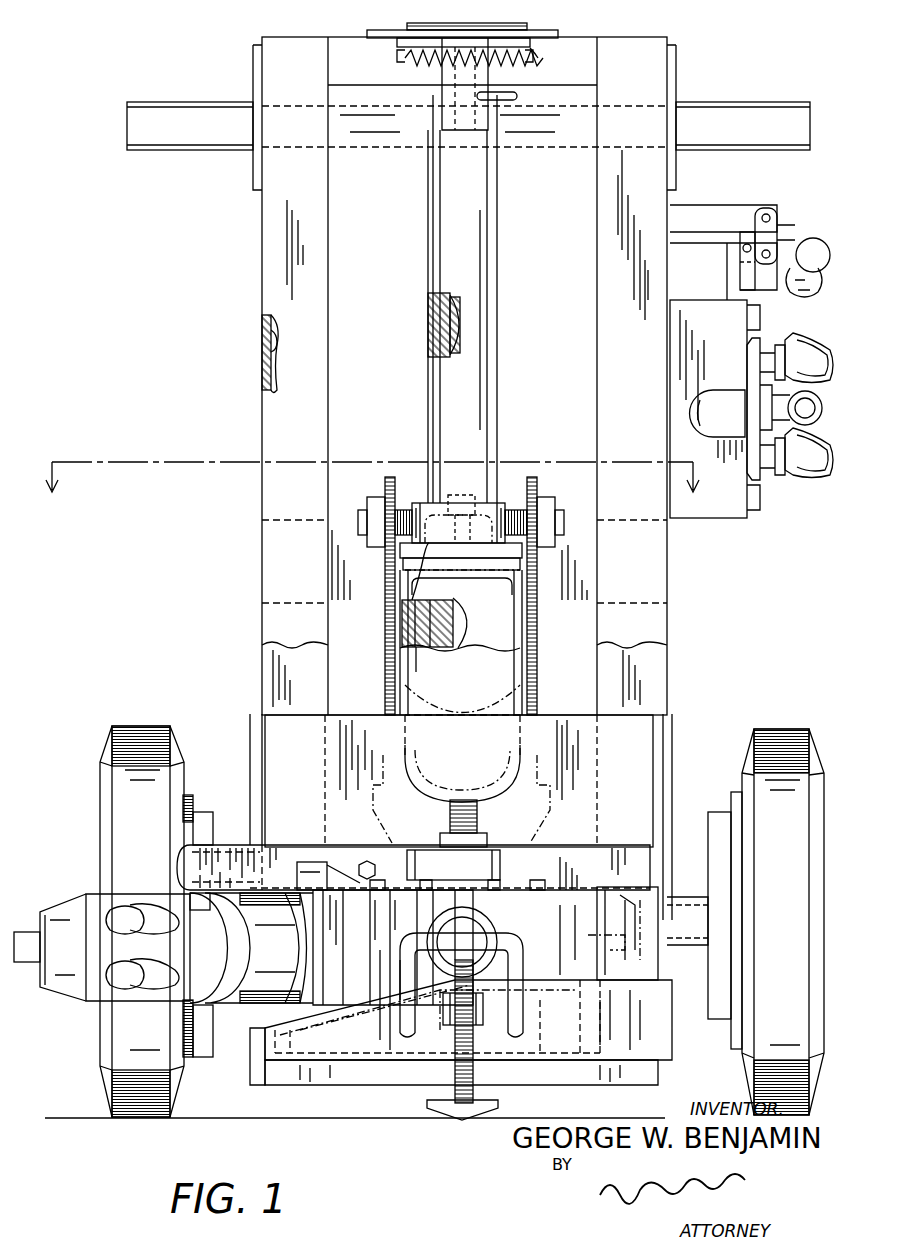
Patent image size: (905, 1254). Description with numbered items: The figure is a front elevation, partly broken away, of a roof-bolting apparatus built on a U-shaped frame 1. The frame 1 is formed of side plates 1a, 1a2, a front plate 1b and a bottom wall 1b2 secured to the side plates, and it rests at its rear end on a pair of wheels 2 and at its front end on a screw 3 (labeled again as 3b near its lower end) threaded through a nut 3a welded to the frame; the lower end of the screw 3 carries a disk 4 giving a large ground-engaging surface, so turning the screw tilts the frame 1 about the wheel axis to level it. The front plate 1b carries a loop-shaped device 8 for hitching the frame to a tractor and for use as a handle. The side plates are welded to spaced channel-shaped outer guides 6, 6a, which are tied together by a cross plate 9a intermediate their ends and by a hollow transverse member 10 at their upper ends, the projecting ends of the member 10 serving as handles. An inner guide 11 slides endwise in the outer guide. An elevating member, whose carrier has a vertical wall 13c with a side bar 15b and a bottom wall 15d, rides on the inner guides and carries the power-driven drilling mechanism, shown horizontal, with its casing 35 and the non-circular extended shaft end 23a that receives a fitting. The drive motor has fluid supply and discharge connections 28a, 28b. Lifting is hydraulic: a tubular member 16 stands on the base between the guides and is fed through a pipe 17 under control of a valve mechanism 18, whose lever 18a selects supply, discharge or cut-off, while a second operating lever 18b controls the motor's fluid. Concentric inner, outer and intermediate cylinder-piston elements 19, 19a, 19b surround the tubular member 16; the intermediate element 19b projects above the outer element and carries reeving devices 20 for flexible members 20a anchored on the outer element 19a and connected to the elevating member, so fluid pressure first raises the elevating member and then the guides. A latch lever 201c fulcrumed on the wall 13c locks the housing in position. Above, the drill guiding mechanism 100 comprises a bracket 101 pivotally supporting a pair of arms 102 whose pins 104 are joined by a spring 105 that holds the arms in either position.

The frame 1 is at (230, 1056).
The side plate 1a is at (250, 1075).
The side plate 1a2 is at (672, 1038).
The front plate 1b is at (640, 985).
The bottom wall 1b2 is at (265, 1085).
The wheels 2 is at (141, 726).
The screw 3 is at (369, 491).
The nut 3a is at (470, 1030).
The screw (3) 3b is at (455, 1090).
The disk 4 is at (450, 1118).
The outer guide 6 is at (262, 335).
The outer guide 6a is at (667, 690).
The loop-shaped device 8 is at (523, 1010).
The cross plate 9a is at (582, 571).
The hollow transverse member 10 is at (350, 130).
The inner guide 11 is at (266, 368).
The vertical wall 13c is at (640, 765).
The side bar 15b is at (595, 915).
The bottom wall 15d is at (560, 1060).
The tubular member 16 is at (455, 327).
The pipe 17 is at (815, 455).
The valve mechanism 18 is at (742, 554).
The lever 18a is at (770, 282).
The operating lever 18b is at (783, 240).
The inner cylinder-piston element 19 is at (428, 310).
The outer cylinder-piston element 19a is at (412, 595).
The intermediate cylinder-piston element 19b is at (435, 671).
The reeving devices 20 is at (385, 486).
The flexible members 20a is at (555, 688).
The lever 201c is at (302, 862).
The extended shaft end 23a is at (30, 932).
The fluid supply connection 28a is at (175, 985).
The fluid discharge connection 28b is at (155, 905).
The casing 35 is at (92, 995).
The drill guiding mechanism 100 is at (522, 68).
The bracket 101 is at (380, 43).
The arms 102 is at (535, 50).
The pins 104 is at (400, 60).
The spring 105 is at (517, 96).